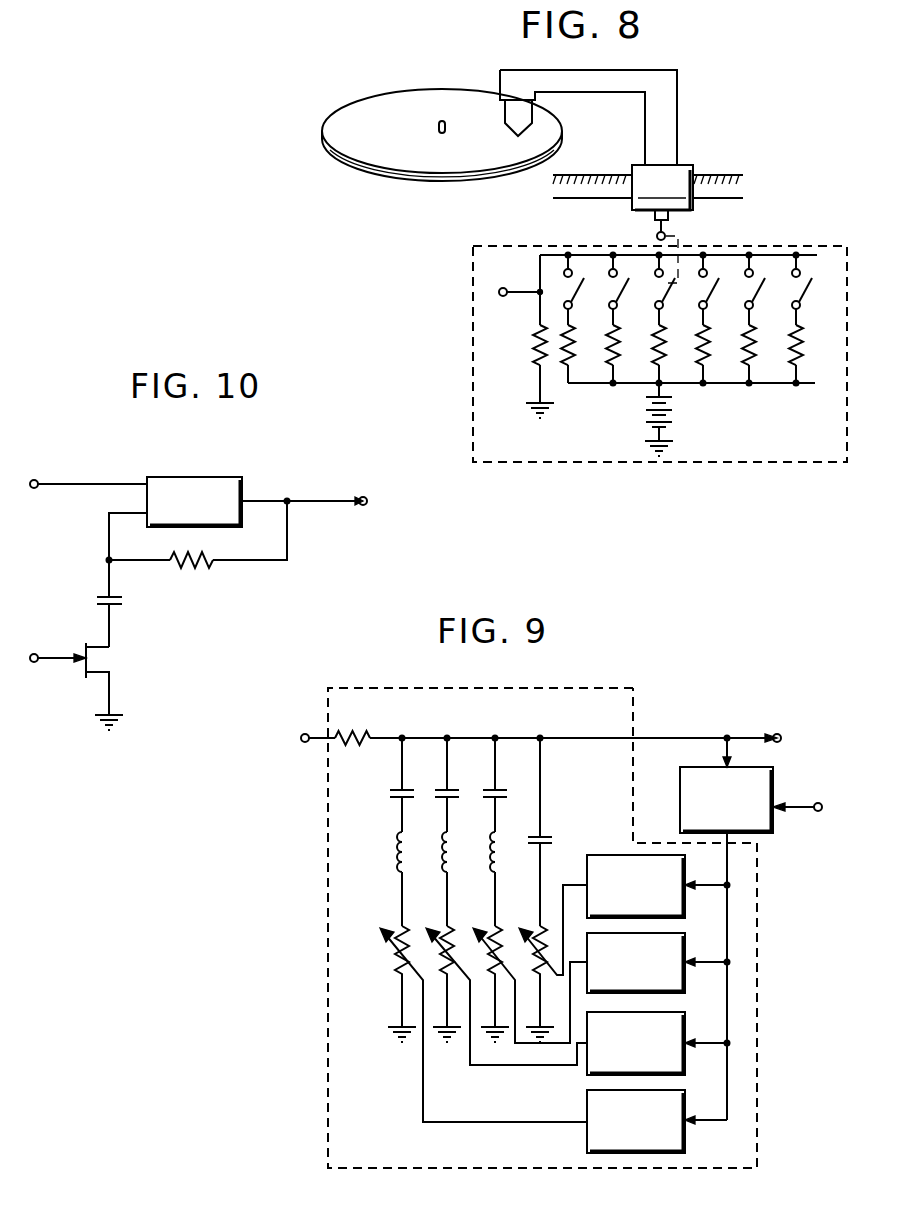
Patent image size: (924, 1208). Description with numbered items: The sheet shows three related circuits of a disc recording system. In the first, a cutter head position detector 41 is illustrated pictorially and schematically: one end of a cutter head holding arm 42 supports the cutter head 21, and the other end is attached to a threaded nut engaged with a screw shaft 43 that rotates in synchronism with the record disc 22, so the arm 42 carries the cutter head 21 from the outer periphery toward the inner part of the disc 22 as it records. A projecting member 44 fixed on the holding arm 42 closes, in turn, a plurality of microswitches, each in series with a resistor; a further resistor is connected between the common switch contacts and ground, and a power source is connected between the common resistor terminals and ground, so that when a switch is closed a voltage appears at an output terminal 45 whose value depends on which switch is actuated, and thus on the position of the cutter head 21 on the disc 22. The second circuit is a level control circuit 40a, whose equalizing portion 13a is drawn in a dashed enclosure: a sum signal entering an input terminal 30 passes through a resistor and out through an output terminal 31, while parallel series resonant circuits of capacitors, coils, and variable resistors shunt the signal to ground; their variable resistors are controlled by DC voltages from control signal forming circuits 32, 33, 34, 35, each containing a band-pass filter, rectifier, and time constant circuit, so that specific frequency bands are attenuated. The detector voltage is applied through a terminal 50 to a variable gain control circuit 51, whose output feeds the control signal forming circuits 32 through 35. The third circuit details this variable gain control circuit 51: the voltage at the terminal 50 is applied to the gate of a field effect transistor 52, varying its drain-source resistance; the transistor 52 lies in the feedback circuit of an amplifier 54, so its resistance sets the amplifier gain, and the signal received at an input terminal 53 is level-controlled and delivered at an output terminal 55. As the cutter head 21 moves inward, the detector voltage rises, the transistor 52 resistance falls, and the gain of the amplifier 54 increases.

In FIG. 8, the cutter head 21 is at (505, 116).
In FIG. 8, the record disc 22 is at (372, 108).
In FIG. 8, the cutter head holding arm 42 is at (678, 105).
In FIG. 8, the screw shaft 43 is at (715, 175).
In FIG. 8, the projecting member 44 is at (656, 234).
In FIG. 8, the cutter head position detector 41 is at (473, 292).
In FIG. 8, the output terminal 45 is at (501, 296).
In FIG. 10, the input terminal 53 is at (34, 479).
In FIG. 10, the amplifier 54 is at (175, 477).
In FIG. 10, the variable gain control circuit 51 is at (272, 445).
In FIG. 9, the variable gain control circuit 51 is at (680, 810).
In FIG. 10, the output terminal 55 is at (363, 497).
In FIG. 10, the field effect transistor 52 is at (112, 661).
In FIG. 10, the terminal 50 is at (34, 662).
In FIG. 9, the terminal 50 is at (818, 803).
In FIG. 9, the input terminal 30 is at (305, 734).
In FIG. 9, the output terminal 31 is at (777, 734).
In FIG. 9, the equalizer 13a is at (635, 705).
In FIG. 9, the level control circuit 40a is at (666, 647).
In FIG. 9, the control signal forming circuit 32 is at (603, 855).
In FIG. 9, the control signal forming circuit 33 is at (687, 948).
In FIG. 9, the control signal forming circuit 34 is at (687, 1026).
In FIG. 9, the control signal forming circuit 35 is at (687, 1108).